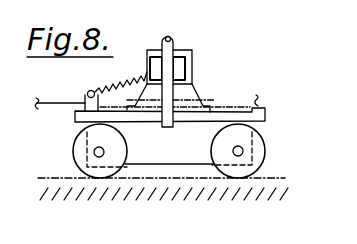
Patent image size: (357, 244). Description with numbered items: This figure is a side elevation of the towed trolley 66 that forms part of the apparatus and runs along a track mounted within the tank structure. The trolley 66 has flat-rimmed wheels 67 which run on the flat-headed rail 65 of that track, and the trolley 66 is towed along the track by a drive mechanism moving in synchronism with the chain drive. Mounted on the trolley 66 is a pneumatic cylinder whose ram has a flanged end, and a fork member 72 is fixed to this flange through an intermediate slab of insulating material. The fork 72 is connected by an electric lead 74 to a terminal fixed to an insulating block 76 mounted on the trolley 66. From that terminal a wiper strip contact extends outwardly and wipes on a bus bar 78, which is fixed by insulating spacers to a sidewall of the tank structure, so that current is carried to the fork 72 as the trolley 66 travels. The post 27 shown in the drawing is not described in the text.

The post 27 is at (172, 39).
The flat-headed rail 65 is at (258, 180).
The trolley 66 is at (254, 116).
The flat-rimmed wheels 67 is at (83, 150).
The fork member 72 is at (180, 68).
The electric lead 74 is at (111, 79).
The insulating block 76 is at (87, 103).
The bus bar 78 is at (51, 117).